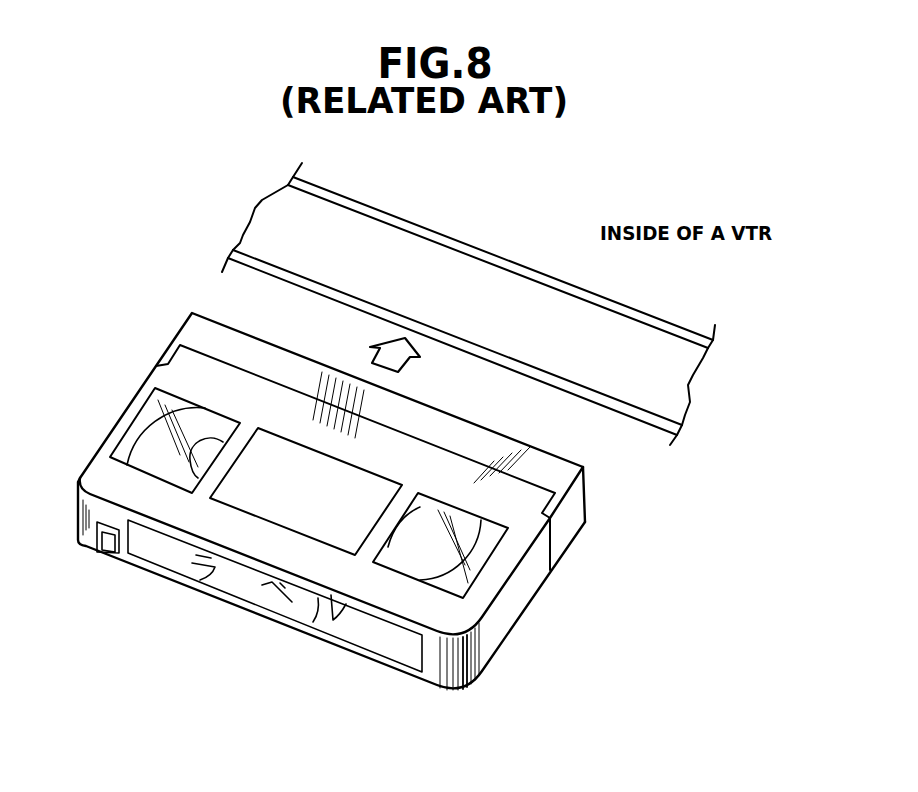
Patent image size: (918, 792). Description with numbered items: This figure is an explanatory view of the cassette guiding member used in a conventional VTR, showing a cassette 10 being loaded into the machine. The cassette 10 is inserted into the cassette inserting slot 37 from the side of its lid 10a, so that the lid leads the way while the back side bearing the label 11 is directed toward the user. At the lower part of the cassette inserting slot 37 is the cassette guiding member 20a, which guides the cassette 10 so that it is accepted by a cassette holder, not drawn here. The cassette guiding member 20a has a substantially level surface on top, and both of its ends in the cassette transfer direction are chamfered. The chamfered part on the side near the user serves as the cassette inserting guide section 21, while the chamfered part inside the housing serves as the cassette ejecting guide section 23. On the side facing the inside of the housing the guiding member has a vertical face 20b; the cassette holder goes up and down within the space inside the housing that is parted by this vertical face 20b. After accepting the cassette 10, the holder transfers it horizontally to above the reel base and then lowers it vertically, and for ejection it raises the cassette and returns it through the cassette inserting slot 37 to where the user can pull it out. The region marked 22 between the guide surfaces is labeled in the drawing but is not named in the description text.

The cassette 10 is at (340, 501).
The lid 10a is at (440, 415).
The label 11 is at (222, 577).
The cassette guiding member 20a is at (461, 363).
The vertical face 20b is at (501, 255).
The cassette inserting guide section 21 is at (260, 268).
The cassette insertion slot 22 is at (480, 275).
The cassette ejecting guide section 23 is at (412, 223).
The cassette inserting slot 37 is at (575, 395).